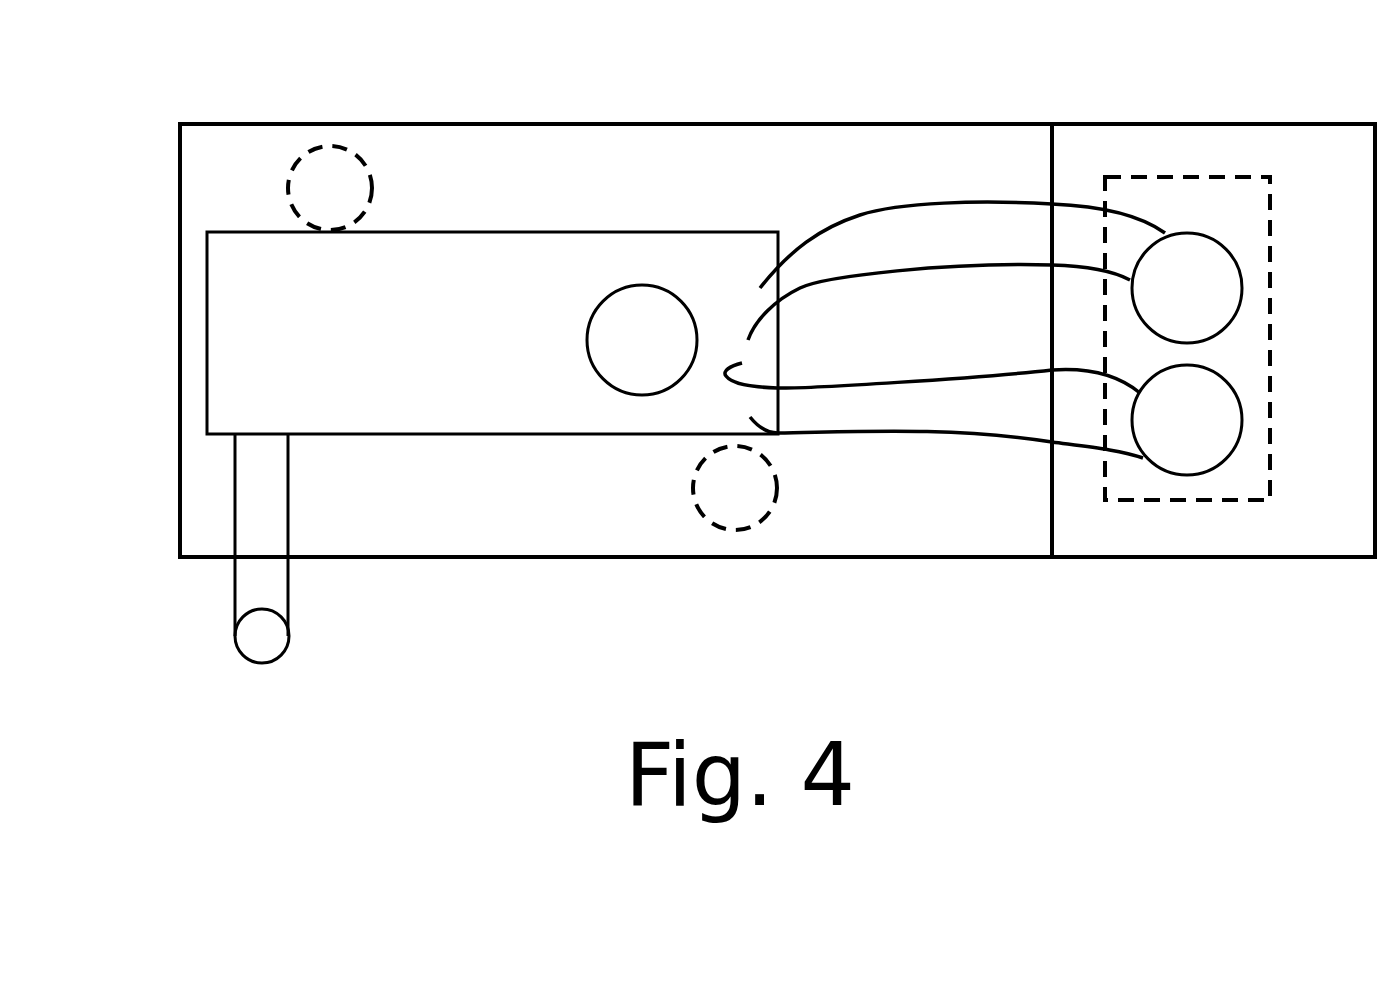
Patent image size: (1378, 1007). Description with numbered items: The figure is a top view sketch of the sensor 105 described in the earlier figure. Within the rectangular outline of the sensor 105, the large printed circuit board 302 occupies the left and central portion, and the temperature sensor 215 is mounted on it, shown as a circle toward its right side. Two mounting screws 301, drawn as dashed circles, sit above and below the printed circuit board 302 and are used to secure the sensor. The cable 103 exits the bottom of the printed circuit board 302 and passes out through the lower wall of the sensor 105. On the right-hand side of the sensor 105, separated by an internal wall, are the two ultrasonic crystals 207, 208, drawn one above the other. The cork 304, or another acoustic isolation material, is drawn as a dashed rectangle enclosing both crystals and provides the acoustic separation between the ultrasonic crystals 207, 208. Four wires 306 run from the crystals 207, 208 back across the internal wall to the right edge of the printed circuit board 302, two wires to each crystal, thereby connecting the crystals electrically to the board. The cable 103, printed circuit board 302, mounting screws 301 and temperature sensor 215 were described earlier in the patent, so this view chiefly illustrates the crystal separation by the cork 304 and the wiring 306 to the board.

The sensor 105 is at (178, 220).
The printed circuit board 302 is at (380, 395).
The temperature sensor 215 is at (635, 335).
The mounting screws 301 is at (365, 170).
The cable 103 is at (233, 585).
The cork 304 is at (1240, 468).
The ultrasonic crystal 207 is at (1221, 313).
The ultrasonic crystal 208 is at (1221, 448).
The wires 306 is at (860, 215).